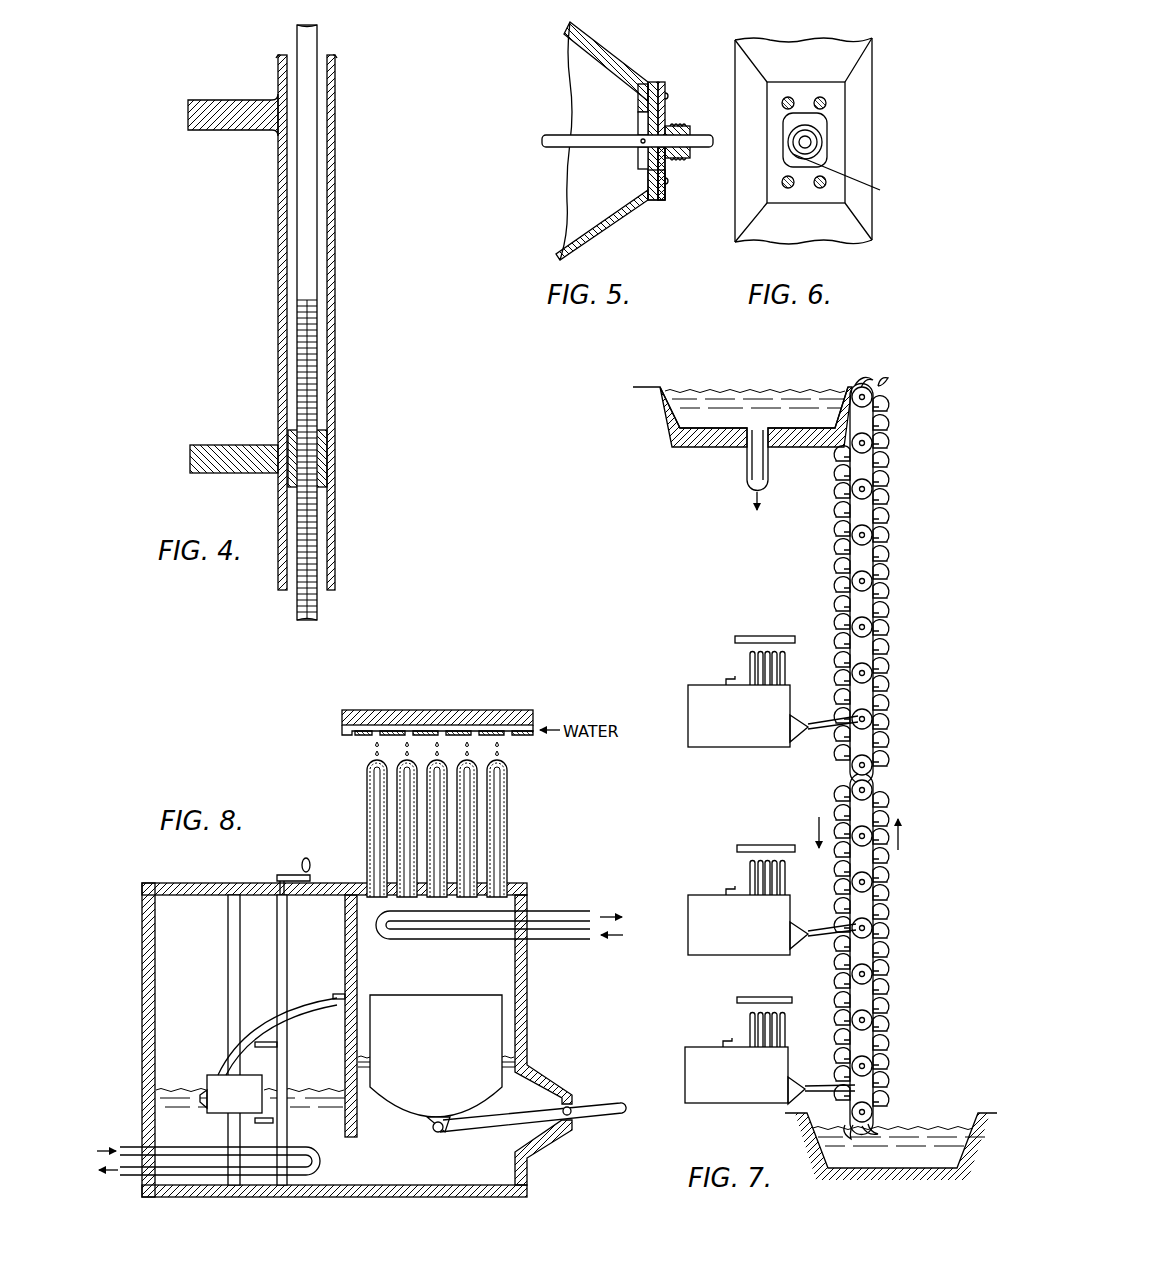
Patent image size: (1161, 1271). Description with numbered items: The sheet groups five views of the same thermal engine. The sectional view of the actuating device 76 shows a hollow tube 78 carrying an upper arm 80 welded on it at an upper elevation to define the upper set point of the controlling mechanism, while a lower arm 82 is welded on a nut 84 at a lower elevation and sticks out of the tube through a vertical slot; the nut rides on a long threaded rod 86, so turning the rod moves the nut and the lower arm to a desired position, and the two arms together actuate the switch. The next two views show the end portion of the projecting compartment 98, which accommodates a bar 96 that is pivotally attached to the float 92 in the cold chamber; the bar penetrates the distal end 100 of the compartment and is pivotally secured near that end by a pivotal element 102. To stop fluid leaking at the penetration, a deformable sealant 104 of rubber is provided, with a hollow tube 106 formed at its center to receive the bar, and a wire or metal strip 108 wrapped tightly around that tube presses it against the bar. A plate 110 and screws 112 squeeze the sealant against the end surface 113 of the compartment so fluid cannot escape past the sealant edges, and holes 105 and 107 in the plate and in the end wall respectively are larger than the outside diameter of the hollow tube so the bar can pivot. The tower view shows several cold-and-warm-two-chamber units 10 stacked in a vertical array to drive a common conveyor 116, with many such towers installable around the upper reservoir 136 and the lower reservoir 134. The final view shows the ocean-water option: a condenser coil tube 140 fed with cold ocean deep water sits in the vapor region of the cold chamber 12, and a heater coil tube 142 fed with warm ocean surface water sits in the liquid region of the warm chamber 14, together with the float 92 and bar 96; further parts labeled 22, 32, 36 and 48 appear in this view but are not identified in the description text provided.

In FIG. 8, the cold-and-warm-two-chamber unit 10 is at (443, 668).
In FIG. 8, the cold chamber 12 is at (510, 973).
In FIG. 8, the warm chamber 14 is at (205, 952).
In FIG. 8, the heat exchange tubes 22 is at (363, 796).
In FIG. 8, the perforated water plate 32 is at (418, 708).
In FIG. 8, the orifices 36 is at (487, 728).
In FIG. 8, the float 48 is at (214, 1070).
In FIG. 4, the actuating device 76 is at (375, 231).
In FIG. 4, the hollow tube 78 is at (337, 103).
In FIG. 4, the upper arm 80 is at (222, 100).
In FIG. 4, the lower arm 82 is at (222, 445).
In FIG. 4, the nut 84 is at (329, 437).
In FIG. 4, the threaded rod 86 is at (319, 322).
In FIG. 8, the float 92 is at (429, 1002).
In FIG. 5, the bar 96 is at (556, 135).
In FIG. 6, the bar 96 is at (808, 144).
In FIG. 8, the bar 96 is at (483, 1124).
In FIG. 5, the projecting compartment 98 is at (592, 44).
In FIG. 5, the distal end 100 is at (647, 96).
In FIG. 5, the pivotal element 102 is at (645, 135).
In FIG. 5, the deformable sealant 104 is at (652, 84).
In FIG. 5, the hole 105 is at (666, 162).
In FIG. 6, the hole 105 is at (824, 118).
In FIG. 5, the hollow tube 106 is at (688, 136).
In FIG. 6, the hollow tube 106 is at (856, 178).
In FIG. 5, the hole 107 is at (645, 160).
In FIG. 5, the wire or metal strip 108 is at (676, 126).
In FIG. 6, the wire or metal strip 108 is at (822, 135).
In FIG. 5, the plate 110 is at (666, 92).
In FIG. 6, the plate 110 is at (824, 97).
In FIG. 5, the screws 112 is at (666, 192).
In FIG. 6, the screws 112 is at (786, 97).
In FIG. 5, the end surface 113 is at (617, 225).
In FIG. 7, the common conveyor 116 is at (910, 651).
In FIG. 7, the lower reservoir 134 is at (922, 1118).
In FIG. 7, the upper reservoir 136 is at (750, 385).
In FIG. 8, the coil tube 140 is at (424, 938).
In FIG. 8, the coil tube 142 is at (196, 1172).